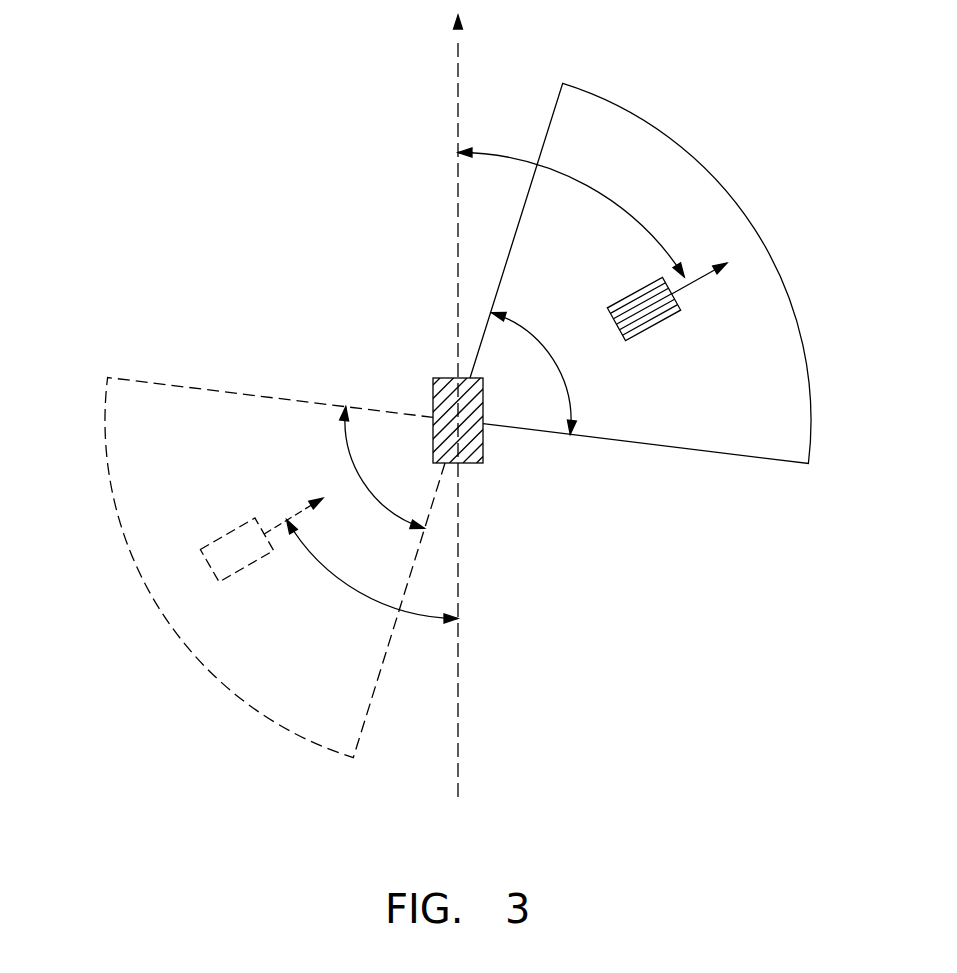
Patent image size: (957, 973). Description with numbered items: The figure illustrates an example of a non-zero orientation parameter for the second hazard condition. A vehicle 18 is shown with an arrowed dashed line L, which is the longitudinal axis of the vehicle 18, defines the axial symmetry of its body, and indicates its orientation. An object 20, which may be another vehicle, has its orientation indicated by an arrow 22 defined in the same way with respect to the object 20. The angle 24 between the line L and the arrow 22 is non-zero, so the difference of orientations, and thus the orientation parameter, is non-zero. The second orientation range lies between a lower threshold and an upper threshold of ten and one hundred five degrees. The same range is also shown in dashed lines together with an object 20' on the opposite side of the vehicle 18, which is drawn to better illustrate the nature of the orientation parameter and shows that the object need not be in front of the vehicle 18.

The vehicle 18 is at (478, 463).
The object 20 is at (742, 352).
The object (behind the vehicle) 20' is at (186, 528).
The arrow 22 is at (700, 290).
The angle 24 is at (613, 197).
The arrowed dashed line (longitudinal axis) L is at (458, 792).